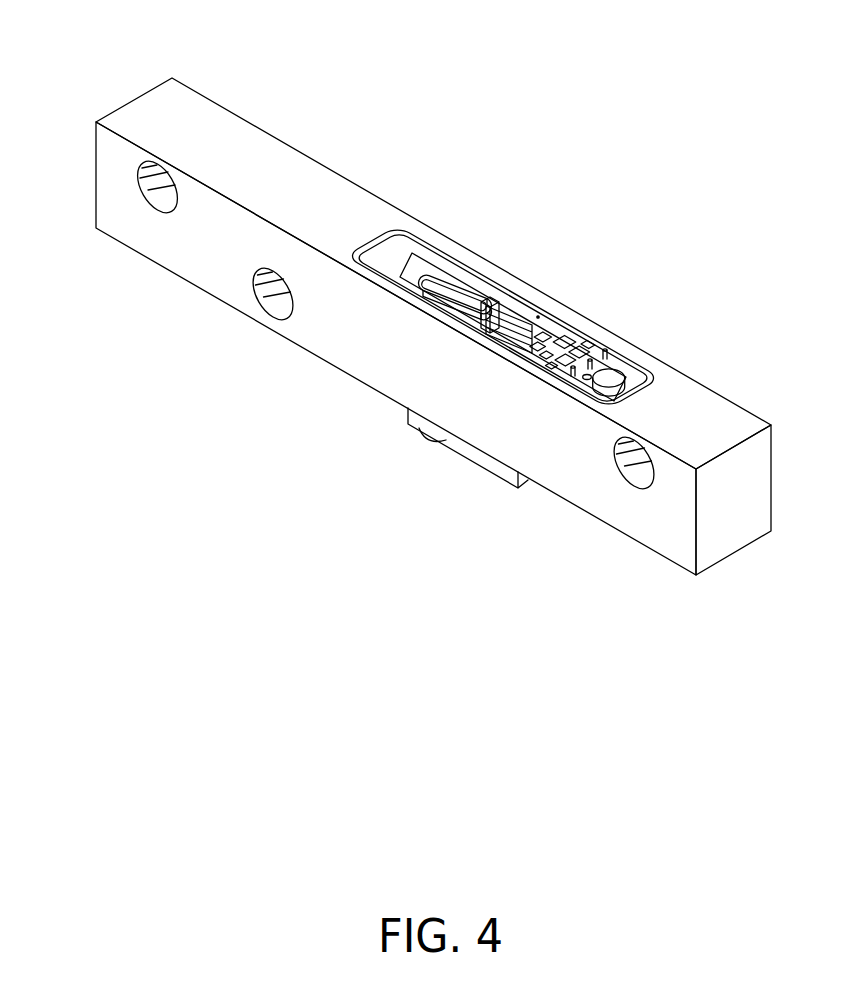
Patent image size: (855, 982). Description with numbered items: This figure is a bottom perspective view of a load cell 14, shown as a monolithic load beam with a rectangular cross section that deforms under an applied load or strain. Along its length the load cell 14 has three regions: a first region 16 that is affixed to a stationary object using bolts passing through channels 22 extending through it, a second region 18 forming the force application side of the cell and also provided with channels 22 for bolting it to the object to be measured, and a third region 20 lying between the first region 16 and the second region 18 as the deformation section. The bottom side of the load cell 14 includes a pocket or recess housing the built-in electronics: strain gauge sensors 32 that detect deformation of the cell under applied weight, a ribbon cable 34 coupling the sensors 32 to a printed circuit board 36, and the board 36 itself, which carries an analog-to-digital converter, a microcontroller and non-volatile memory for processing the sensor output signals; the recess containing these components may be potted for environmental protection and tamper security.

The load cell 14 is at (124, 46).
The first region 16 is at (698, 402).
The second region 18 is at (229, 130).
The third region 20 is at (390, 381).
The channels 22 is at (145, 197).
The strain gauge sensors 32 is at (417, 270).
The ribbon cable 34 is at (483, 297).
The printed circuit board 36 is at (633, 372).